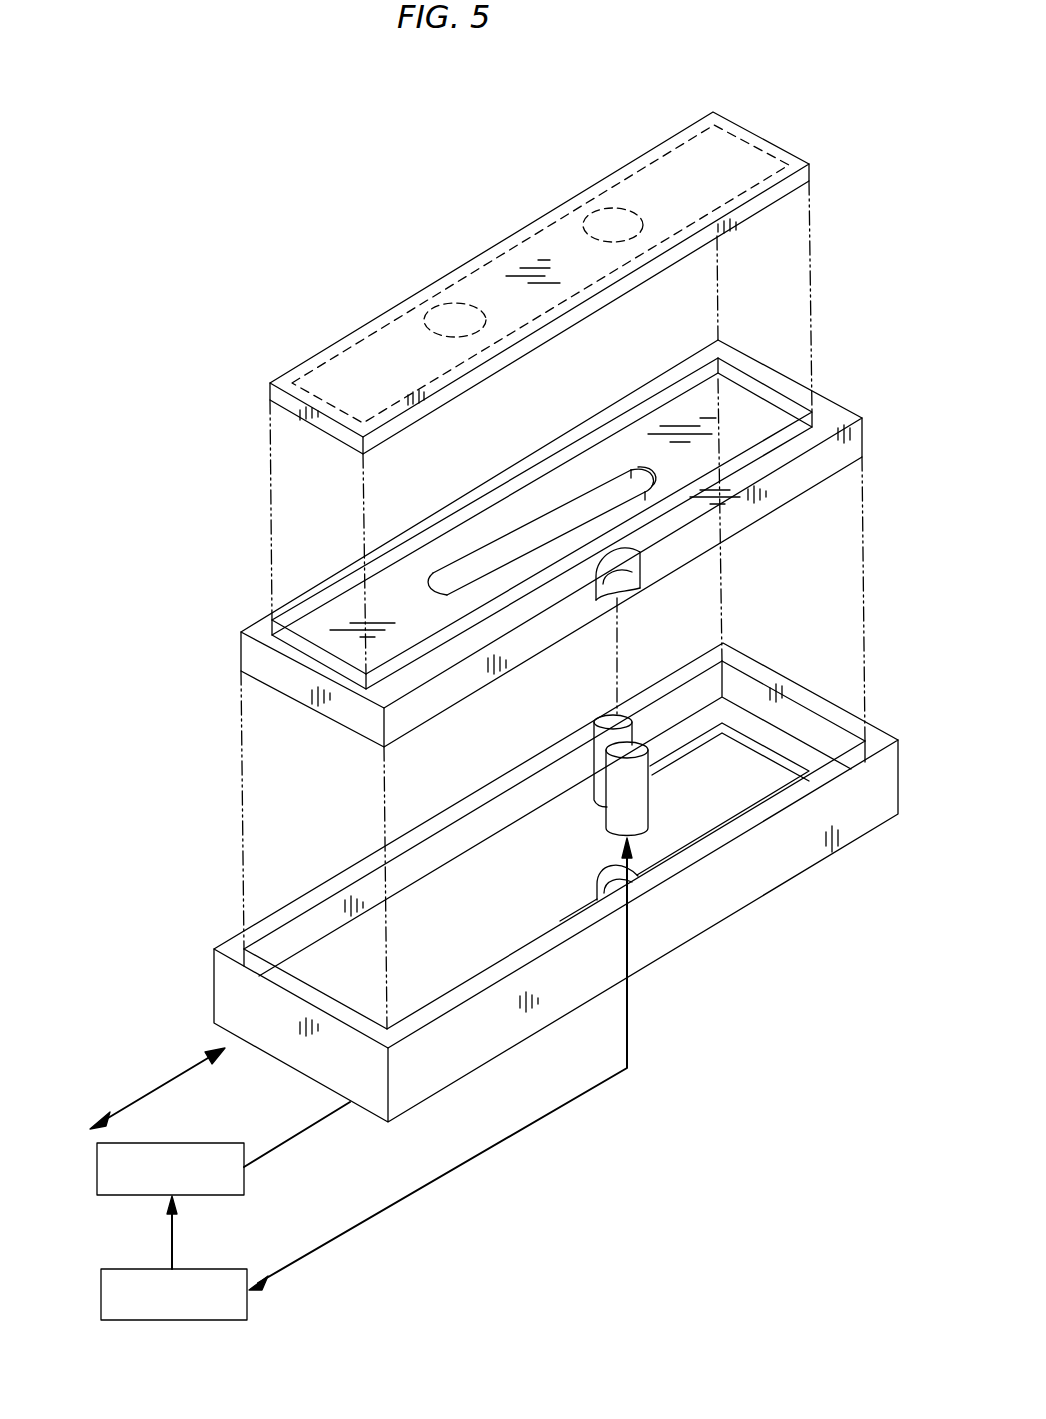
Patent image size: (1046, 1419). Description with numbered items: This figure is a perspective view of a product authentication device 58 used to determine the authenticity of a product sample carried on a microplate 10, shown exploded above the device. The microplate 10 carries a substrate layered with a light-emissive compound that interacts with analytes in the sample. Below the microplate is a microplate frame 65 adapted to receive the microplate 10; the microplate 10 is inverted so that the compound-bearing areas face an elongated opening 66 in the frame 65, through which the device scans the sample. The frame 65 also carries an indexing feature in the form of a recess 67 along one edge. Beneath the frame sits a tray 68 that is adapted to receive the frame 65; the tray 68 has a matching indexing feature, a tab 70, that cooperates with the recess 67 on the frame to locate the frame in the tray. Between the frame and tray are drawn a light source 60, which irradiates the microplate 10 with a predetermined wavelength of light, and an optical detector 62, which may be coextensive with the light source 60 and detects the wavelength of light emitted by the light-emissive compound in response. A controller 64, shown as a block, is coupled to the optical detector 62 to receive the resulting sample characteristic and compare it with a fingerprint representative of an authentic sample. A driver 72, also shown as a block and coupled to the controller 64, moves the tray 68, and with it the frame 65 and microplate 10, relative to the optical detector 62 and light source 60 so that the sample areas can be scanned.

The microplate 10 is at (568, 182).
The product authentication device 58 is at (200, 550).
The light source 60 is at (638, 766).
The optical detector 62 is at (611, 720).
The controller 64 is at (100, 1301).
The intermediate block with recess 65 is at (833, 416).
The opening 66 is at (458, 592).
The recess 67 is at (622, 586).
The tray 68 is at (773, 740).
The tab 70 is at (620, 890).
The driver 72 is at (96, 1175).